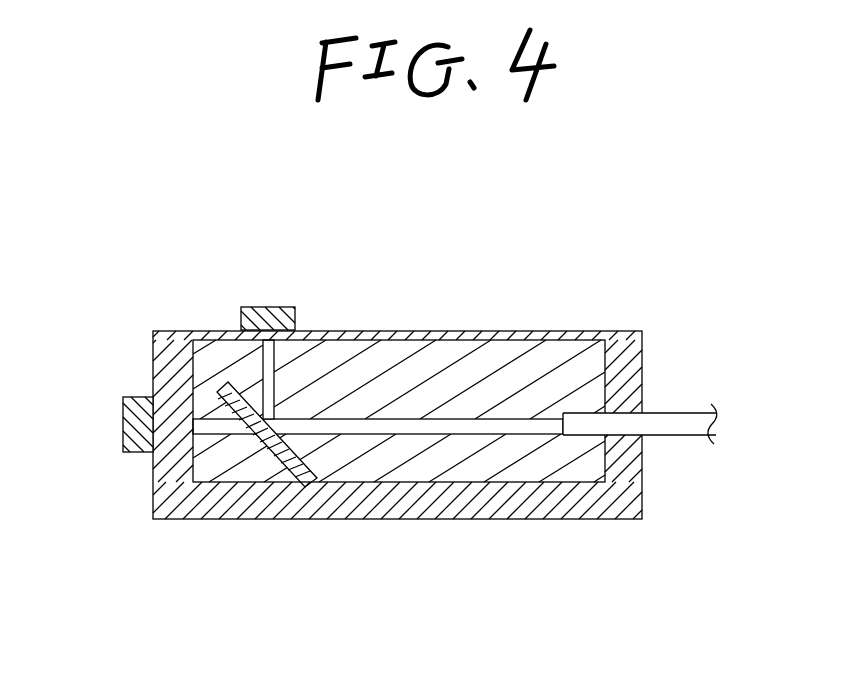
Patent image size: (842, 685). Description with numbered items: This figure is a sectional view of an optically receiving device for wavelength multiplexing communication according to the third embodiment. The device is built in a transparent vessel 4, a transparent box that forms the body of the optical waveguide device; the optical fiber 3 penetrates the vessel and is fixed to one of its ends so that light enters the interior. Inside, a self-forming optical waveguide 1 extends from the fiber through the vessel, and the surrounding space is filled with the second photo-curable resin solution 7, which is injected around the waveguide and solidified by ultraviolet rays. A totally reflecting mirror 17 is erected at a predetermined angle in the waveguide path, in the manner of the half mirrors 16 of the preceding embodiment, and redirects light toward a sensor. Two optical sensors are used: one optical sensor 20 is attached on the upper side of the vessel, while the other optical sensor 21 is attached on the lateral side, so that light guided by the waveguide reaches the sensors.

The optical waveguide 1 is at (297, 329).
The optical fiber 3 is at (682, 410).
The transparent vessel 4 is at (183, 517).
The second photo-curable resin solution 7 is at (399, 481).
The half mirror 16 is at (492, 458).
The totally reflecting mirror 17 is at (255, 443).
The optical sensor 20 is at (260, 307).
The optical sensor 21 is at (103, 415).